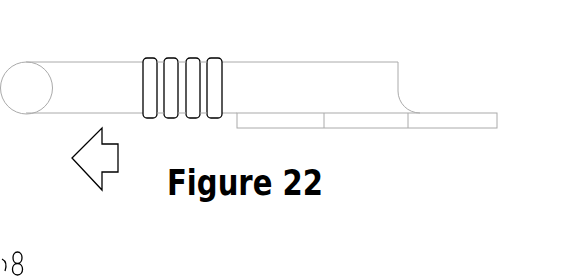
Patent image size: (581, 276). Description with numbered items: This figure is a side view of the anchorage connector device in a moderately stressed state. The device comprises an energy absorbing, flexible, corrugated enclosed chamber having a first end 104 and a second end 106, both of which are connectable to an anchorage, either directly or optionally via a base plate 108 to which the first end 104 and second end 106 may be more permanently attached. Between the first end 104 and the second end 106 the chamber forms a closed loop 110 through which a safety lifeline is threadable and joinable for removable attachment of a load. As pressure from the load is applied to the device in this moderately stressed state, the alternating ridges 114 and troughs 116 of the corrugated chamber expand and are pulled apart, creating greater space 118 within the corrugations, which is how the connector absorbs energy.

The first end 104 is at (380, 85).
The second end 106 is at (16, 175).
The base plate 108 is at (454, 125).
The closed loop 110 is at (30, 85).
The ridges 114 is at (210, 62).
The troughs 116 is at (160, 58).
The space 118 is at (182, 87).